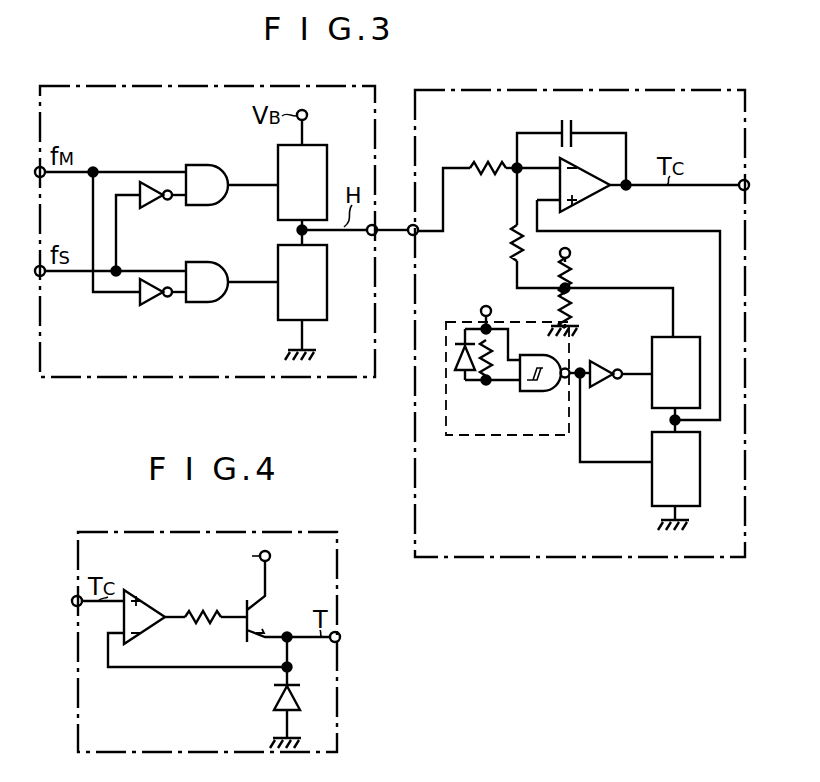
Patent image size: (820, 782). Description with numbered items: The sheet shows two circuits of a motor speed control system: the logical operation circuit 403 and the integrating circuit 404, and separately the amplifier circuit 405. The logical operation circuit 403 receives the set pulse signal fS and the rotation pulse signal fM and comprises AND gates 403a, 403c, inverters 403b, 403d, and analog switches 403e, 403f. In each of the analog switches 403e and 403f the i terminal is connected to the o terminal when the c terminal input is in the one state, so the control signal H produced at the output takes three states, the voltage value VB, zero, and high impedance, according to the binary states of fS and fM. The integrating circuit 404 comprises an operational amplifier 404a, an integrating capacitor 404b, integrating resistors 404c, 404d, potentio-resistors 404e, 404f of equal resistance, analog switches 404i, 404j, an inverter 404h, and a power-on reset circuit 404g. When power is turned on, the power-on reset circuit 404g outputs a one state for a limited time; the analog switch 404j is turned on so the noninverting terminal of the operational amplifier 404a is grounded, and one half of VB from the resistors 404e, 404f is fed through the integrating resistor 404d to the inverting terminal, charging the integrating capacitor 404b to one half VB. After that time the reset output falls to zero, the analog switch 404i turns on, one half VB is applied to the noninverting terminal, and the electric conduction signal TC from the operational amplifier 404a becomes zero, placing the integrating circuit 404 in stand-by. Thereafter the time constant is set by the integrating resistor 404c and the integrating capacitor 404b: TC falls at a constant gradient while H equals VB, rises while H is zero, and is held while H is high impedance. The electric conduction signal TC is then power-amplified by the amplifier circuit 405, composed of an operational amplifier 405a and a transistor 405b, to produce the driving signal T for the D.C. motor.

In FIG. 3, the logical operation circuit 403 is at (172, 86).
In FIG. 3, the AND gate 403a is at (214, 165).
In FIG. 3, the inverter 403b is at (159, 179).
In FIG. 3, the AND gate 403c is at (221, 264).
In FIG. 3, the inverter 403d is at (160, 279).
In FIG. 3, the analog switch 403e is at (327, 159).
In FIG. 3, the analog switch 403f is at (315, 321).
In FIG. 3, the integrating circuit 404 is at (535, 90).
In FIG. 3, the operational amplifier 404a is at (588, 167).
In FIG. 3, the integrating capacitor 404b is at (556, 128).
In FIG. 3, the integrating resistor 404c is at (482, 163).
In FIG. 3, the integrating resistor 404d is at (508, 244).
In FIG. 3, the potentio-resistor 404e is at (577, 272).
In FIG. 3, the potentio-resistor 404f is at (576, 301).
In FIG. 3, the power-on reset circuit 404g is at (531, 435).
In FIG. 3, the inverter 404h is at (604, 360).
In FIG. 3, the analog switch 404i is at (652, 406).
In FIG. 3, the analog switch 404j is at (652, 476).
In FIG. 4, the amplifier circuit 405 is at (220, 532).
In FIG. 4, the operational amplifier 405a is at (162, 610).
In FIG. 4, the transistor 405b is at (292, 596).